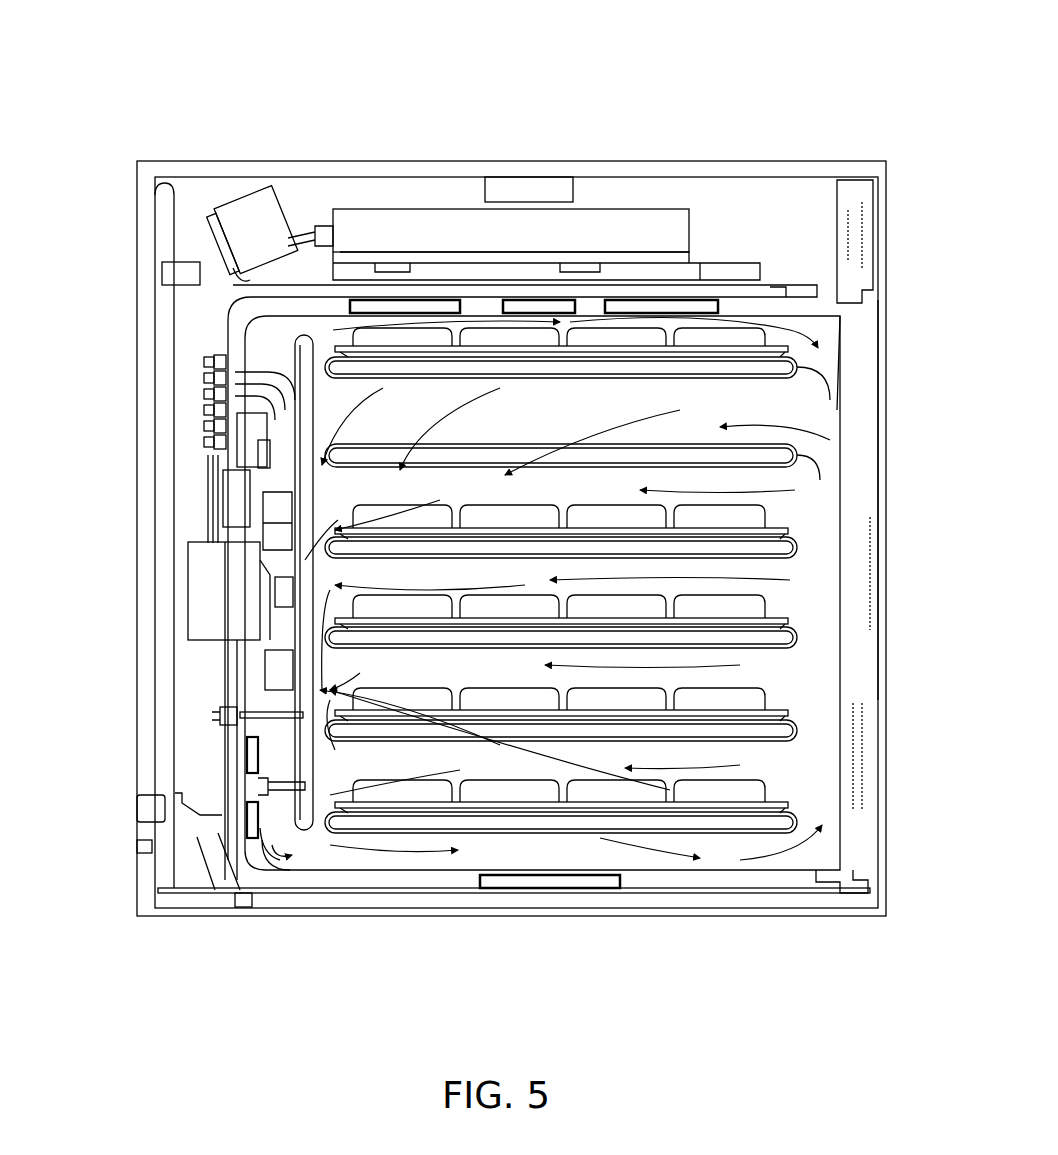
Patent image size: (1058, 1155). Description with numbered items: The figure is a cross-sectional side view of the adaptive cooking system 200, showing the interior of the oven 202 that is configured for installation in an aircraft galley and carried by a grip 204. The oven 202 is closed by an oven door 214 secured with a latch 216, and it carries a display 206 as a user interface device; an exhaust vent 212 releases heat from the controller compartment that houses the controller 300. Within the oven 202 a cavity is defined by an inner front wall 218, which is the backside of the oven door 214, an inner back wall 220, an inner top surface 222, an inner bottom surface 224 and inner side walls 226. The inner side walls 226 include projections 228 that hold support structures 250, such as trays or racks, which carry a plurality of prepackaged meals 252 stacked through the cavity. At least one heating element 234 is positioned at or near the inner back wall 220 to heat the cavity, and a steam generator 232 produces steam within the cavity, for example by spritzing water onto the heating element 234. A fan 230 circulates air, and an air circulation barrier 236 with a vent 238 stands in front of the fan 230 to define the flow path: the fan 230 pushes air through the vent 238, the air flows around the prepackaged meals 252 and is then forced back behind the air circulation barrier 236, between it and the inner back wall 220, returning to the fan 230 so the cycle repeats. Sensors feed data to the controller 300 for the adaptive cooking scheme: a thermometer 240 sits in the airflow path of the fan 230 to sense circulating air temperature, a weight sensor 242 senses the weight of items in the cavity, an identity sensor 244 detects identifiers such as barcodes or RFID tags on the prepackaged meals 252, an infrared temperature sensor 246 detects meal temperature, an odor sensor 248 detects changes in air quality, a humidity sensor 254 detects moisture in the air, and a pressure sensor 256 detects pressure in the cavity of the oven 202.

The adaptive cooking system 200 is at (218, 85).
The oven 202 is at (467, 160).
The grip 204 is at (533, 190).
The display 206 is at (858, 237).
The exhaust vent 212 is at (882, 185).
The oven door 214 is at (882, 470).
The latch 216 is at (878, 610).
The inner front wall 218 is at (840, 408).
The inner back wall 220 is at (280, 860).
The inner top surface 222 is at (755, 310).
The inner bottom surface 224 is at (417, 870).
The inner side walls 226 is at (740, 860).
The projections 228 is at (655, 822).
The fan 230 is at (275, 530).
The steam generator 232 is at (295, 595).
The heating element 234 is at (275, 512).
The air circulation barrier 236 is at (300, 405).
The vent 238 is at (300, 637).
The thermometer 240 is at (305, 710).
The weight sensor 242 is at (545, 880).
The identity sensor 244 is at (690, 305).
The infrared temperature sensor 246 is at (400, 300).
The odor sensor 248 is at (250, 758).
The support structures 250 is at (780, 800).
The prepackaged meals 252 is at (745, 800).
The humidity sensor 254 is at (248, 828).
The pressure sensor 256 is at (553, 310).
The controller 300 is at (375, 222).